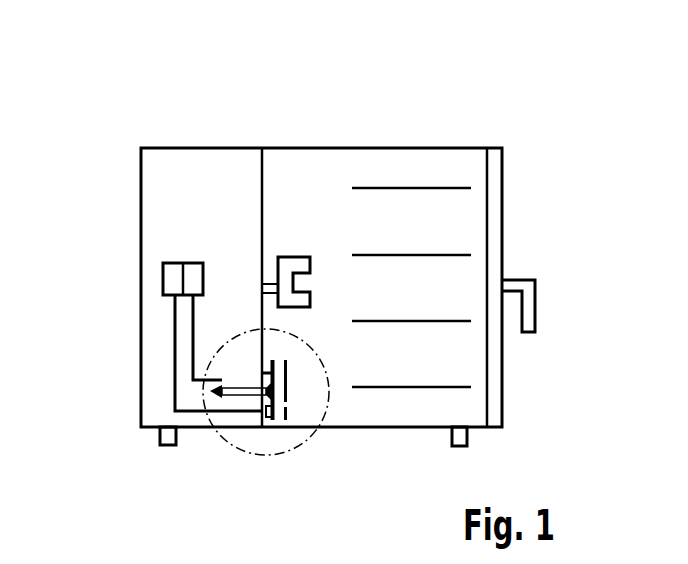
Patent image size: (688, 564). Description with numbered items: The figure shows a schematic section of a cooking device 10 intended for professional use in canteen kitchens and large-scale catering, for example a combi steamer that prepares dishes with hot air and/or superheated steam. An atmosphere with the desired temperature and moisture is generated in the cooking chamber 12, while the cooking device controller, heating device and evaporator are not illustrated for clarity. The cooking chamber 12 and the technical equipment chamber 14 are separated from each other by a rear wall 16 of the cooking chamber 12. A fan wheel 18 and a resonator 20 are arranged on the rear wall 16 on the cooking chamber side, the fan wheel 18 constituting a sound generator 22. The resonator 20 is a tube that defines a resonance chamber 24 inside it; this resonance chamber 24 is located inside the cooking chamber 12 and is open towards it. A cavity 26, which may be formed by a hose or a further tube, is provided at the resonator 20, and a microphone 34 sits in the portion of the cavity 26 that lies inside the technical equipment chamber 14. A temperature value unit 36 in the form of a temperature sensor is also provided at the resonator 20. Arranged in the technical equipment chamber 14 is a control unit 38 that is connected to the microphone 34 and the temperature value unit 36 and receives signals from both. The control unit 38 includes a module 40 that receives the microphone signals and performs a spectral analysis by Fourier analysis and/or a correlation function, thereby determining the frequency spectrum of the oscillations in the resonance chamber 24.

The cooking device 10 is at (318, 72).
The cooking chamber 12 is at (412, 160).
The technical equipment chamber 14 is at (213, 291).
The rear wall 16 is at (263, 172).
The fan wheel 18 is at (330, 200).
The sound generator 22 is at (296, 263).
The resonator 20 is at (287, 383).
The resonance chamber 24 is at (284, 420).
The cavity 26 is at (248, 398).
The microphone 34 is at (222, 398).
The temperature value unit 36 is at (268, 418).
The control unit 38 is at (148, 280).
The module 40 is at (195, 270).